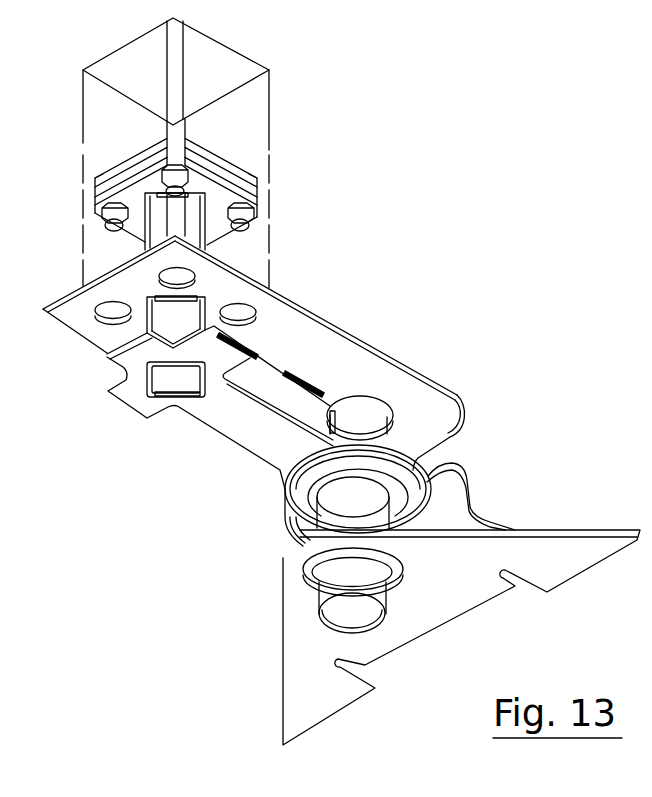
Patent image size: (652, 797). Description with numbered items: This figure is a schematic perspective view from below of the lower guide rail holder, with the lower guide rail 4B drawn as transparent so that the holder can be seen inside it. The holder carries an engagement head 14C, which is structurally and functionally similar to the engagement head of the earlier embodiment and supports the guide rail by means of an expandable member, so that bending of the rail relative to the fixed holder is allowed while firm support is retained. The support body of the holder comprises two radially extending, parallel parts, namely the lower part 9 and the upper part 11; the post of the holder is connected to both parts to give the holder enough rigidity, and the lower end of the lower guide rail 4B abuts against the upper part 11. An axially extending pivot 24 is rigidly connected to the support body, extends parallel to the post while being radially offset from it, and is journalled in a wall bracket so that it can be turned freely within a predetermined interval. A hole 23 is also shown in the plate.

The lower guide rail 4B is at (253, 92).
The engagement head 14C is at (263, 198).
The upper part of the support body 11 is at (309, 324).
The hole 23 is at (112, 312).
The lower part of the support body 9 is at (233, 427).
The pivot 24 is at (342, 579).